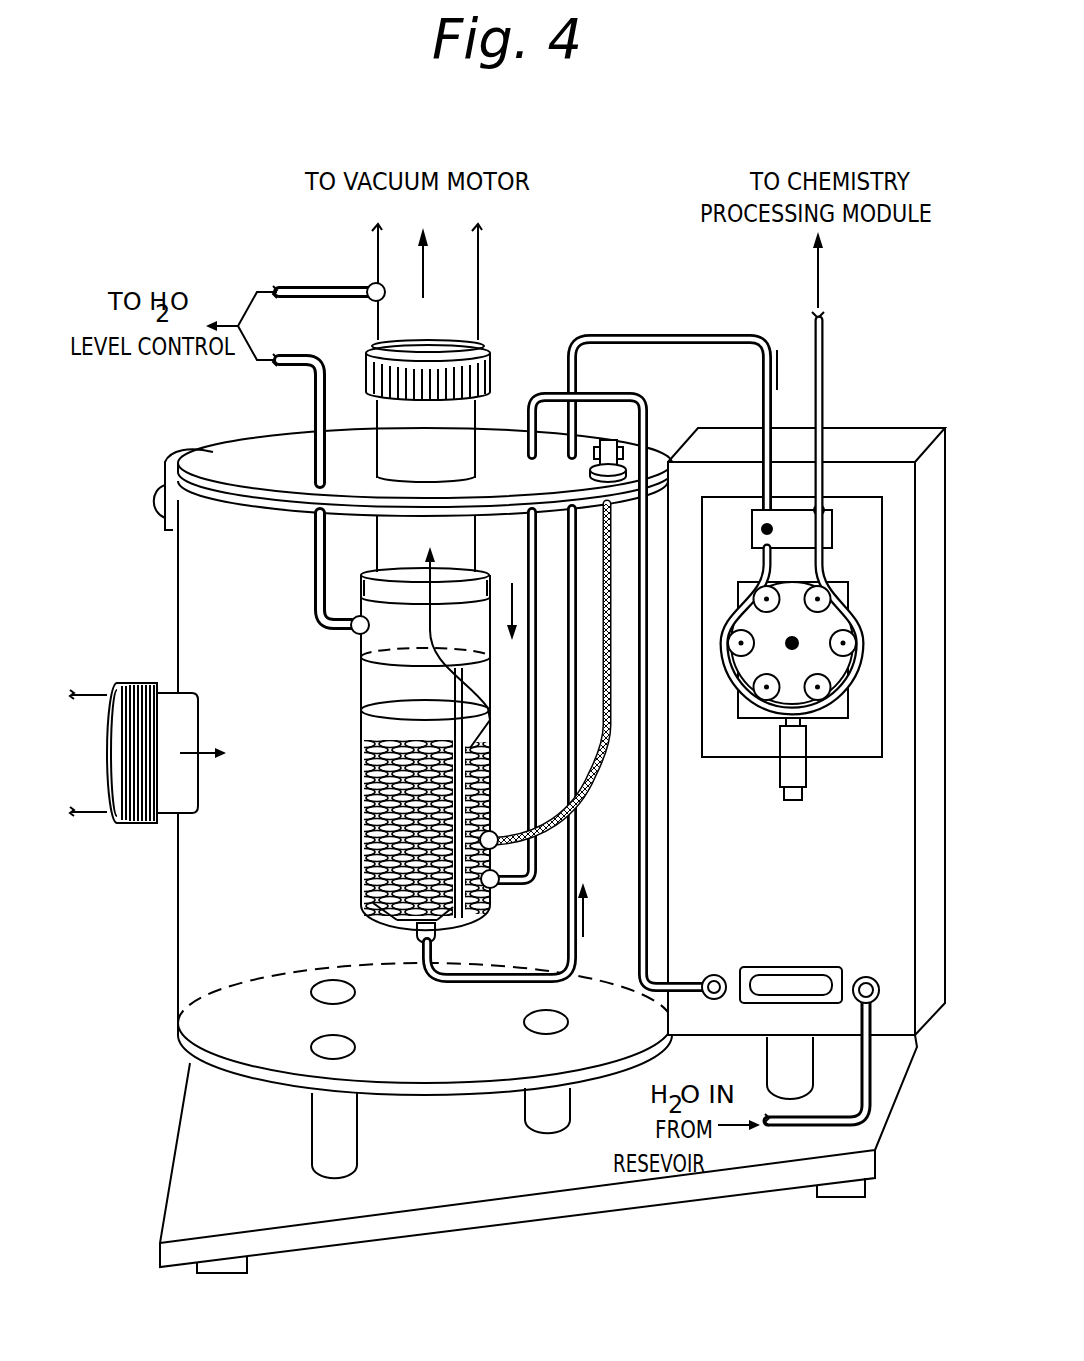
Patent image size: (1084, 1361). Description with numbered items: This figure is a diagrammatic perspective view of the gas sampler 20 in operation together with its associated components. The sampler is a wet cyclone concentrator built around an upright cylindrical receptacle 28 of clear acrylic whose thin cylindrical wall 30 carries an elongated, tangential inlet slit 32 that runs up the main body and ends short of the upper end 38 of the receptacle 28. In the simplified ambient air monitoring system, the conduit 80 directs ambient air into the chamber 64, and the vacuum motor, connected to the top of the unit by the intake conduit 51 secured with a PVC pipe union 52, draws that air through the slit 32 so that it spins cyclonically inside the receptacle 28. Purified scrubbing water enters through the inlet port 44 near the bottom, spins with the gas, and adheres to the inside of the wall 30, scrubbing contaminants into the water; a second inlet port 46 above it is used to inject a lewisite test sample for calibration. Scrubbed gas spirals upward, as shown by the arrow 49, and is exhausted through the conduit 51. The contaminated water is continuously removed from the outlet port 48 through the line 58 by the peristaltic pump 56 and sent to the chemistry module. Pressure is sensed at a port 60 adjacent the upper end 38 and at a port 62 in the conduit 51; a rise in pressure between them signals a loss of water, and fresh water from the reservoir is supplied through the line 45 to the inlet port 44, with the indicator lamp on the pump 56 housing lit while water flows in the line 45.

The gas sampler 20 is at (160, 585).
The receptacle 28 is at (346, 874).
The cylindrical wall 30 is at (361, 693).
The inlet slit 32 is at (484, 707).
The upper end 38 is at (481, 573).
The inlet port 44 is at (497, 888).
The line 45 is at (638, 838).
The second inlet port 46 is at (503, 818).
The outlet port 48 is at (418, 933).
The arrow 49 is at (438, 632).
The intake conduit 51 is at (480, 258).
The PVC pipe union 52 is at (486, 370).
The peristaltic pump 56 is at (734, 697).
The line 58 is at (483, 987).
The port 60 is at (347, 633).
The port 62 is at (370, 283).
The chamber 64 is at (178, 910).
The conduit 80 is at (83, 695).